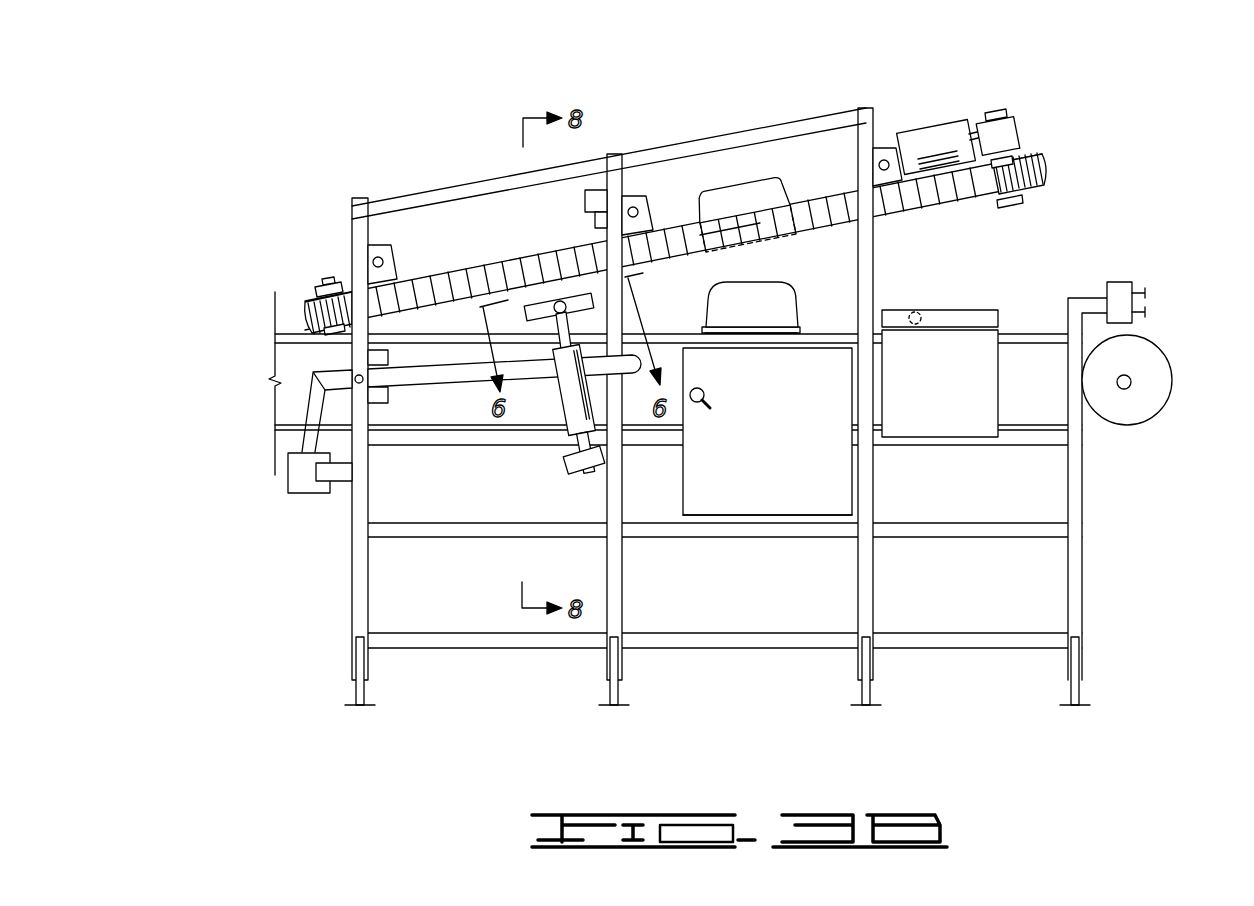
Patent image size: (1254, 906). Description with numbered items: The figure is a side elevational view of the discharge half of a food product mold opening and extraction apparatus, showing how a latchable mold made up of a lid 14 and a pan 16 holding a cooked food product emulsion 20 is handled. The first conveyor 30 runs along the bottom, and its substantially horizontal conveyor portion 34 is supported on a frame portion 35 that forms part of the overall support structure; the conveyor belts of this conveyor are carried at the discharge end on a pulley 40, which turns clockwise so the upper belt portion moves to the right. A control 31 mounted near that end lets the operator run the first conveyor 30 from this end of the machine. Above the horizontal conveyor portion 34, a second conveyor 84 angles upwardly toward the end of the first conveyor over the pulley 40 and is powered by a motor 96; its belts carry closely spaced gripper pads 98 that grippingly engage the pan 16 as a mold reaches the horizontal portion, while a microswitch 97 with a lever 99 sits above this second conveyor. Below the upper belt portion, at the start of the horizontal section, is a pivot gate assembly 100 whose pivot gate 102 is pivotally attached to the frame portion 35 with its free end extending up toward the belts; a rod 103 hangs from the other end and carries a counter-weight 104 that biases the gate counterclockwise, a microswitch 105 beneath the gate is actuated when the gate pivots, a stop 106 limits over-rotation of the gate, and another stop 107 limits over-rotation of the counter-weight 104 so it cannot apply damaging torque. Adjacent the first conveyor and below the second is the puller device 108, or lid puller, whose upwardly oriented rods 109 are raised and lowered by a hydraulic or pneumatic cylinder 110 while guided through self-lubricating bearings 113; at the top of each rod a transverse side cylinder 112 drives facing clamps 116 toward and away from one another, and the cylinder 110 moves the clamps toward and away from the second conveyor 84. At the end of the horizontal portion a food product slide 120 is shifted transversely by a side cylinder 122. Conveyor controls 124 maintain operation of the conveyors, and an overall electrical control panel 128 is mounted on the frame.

The first mold portion 14 is at (773, 325).
The second mold portion 16 is at (763, 197).
The food product emulsion 20 is at (752, 288).
The first conveyor 30 is at (751, 466).
The control 31 is at (1123, 287).
The horizontal conveyor portion 34 is at (767, 463).
The frame portion 35 is at (352, 625).
The pulley 40 is at (1147, 363).
The second conveyor 84 is at (681, 215).
The motor 96 is at (935, 125).
The microswitch 97 is at (597, 195).
The gripper pads 98 is at (435, 278).
The lever 99 is at (628, 218).
The pivot gate assembly 100 is at (403, 400).
The pivot gate 102 is at (443, 390).
The rod 103 is at (313, 420).
The counter-weight 104 is at (298, 485).
The microswitch 105 is at (375, 395).
The stop 106 is at (374, 357).
The stop 107 is at (340, 478).
The puller device 108 is at (594, 408).
The rods 109 is at (561, 397).
The cylinder 110 is at (569, 474).
The side cylinder 112 is at (557, 302).
The bearings 113 is at (557, 328).
The clamps 116 is at (535, 280).
The food product slide 120 is at (980, 318).
The side cylinder 122 is at (918, 312).
The conveyor controls 124 is at (940, 427).
The electrical control panel 128 is at (787, 508).